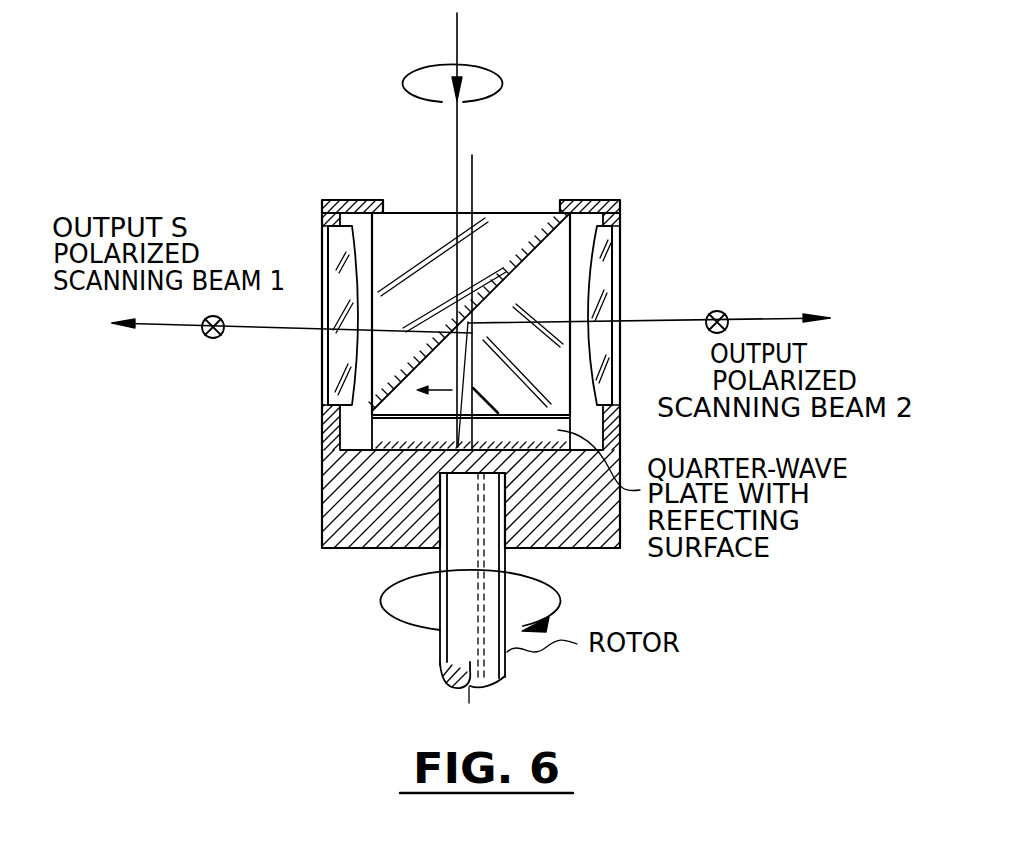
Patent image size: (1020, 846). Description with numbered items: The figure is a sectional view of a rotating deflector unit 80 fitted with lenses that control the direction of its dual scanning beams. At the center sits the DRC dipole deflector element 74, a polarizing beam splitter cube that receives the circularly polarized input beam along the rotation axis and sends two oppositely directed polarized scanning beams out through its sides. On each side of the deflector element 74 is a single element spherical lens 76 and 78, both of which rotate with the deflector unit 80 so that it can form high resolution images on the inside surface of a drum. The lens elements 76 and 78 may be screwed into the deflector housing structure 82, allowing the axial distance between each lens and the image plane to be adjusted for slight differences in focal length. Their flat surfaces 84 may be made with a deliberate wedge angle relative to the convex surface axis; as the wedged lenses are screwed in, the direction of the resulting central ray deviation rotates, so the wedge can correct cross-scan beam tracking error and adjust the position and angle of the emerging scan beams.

The deflector unit 80 is at (250, 175).
The DRC dipole deflector element 74 is at (543, 213).
The single element spherical lens 76 is at (603, 279).
The single element spherical lens 78 is at (322, 386).
The deflector housing structure 82 is at (322, 490).
The flat surface 84 is at (322, 348).